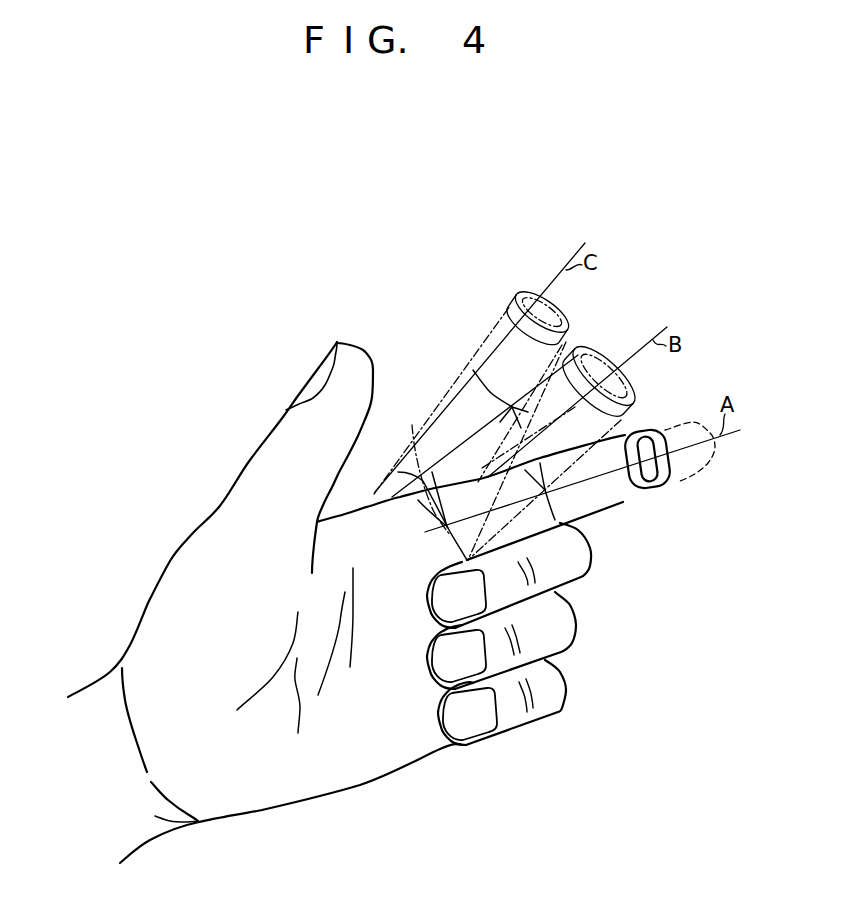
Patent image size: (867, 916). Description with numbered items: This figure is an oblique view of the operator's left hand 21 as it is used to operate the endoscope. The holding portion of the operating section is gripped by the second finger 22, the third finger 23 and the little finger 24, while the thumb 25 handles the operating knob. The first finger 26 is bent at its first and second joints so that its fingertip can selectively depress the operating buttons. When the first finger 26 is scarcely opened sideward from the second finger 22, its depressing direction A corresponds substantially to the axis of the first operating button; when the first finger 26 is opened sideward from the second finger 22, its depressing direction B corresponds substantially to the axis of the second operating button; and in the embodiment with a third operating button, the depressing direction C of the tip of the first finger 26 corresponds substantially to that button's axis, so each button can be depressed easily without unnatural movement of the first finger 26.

The left hand 21 is at (298, 801).
The second finger 22 is at (578, 556).
The third finger 23 is at (567, 628).
The little finger 24 is at (560, 702).
The thumb 25 is at (345, 343).
The first finger 26 is at (627, 495).